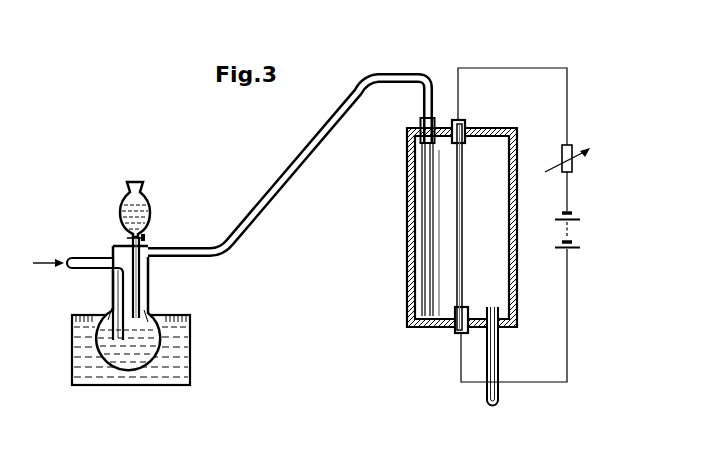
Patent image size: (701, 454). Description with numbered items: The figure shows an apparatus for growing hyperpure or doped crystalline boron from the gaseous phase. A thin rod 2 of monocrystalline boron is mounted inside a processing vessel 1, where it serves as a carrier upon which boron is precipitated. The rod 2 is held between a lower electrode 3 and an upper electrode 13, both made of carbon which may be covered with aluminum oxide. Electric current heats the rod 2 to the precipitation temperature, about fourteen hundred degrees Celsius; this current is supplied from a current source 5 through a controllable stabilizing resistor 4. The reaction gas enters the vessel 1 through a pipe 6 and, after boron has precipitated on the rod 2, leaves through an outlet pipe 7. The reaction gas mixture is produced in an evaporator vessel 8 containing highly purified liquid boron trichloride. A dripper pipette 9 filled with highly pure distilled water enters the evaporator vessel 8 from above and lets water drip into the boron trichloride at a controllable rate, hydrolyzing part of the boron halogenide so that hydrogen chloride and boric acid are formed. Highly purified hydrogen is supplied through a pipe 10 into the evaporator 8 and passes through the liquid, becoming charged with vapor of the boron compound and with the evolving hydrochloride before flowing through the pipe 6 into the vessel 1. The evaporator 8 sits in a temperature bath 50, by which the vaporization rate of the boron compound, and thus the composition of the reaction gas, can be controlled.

The processing vessel 1 is at (407, 213).
The thin rod 2 is at (463, 214).
The electrode 3 is at (455, 326).
The controllable stabilizing resistor 4 is at (567, 159).
The current source 5 is at (574, 230).
The pipe 6 is at (424, 121).
The outlet pipe 7 is at (499, 336).
The evaporator vessel 8 is at (145, 318).
The dripper pipette 9 is at (150, 213).
The pipe 10 is at (73, 268).
The electrode 13 is at (459, 121).
The temperature bath 50 is at (107, 373).